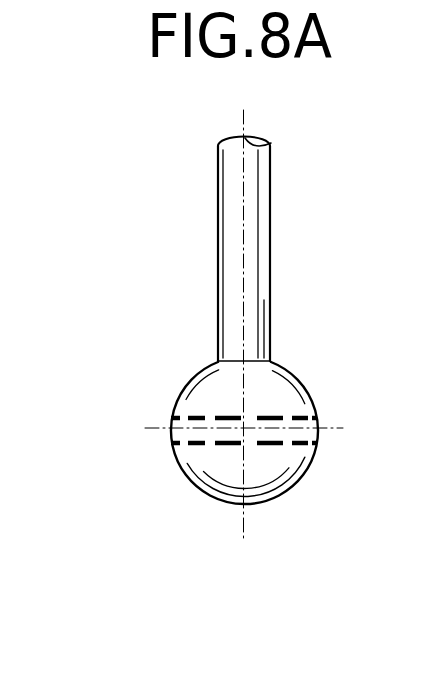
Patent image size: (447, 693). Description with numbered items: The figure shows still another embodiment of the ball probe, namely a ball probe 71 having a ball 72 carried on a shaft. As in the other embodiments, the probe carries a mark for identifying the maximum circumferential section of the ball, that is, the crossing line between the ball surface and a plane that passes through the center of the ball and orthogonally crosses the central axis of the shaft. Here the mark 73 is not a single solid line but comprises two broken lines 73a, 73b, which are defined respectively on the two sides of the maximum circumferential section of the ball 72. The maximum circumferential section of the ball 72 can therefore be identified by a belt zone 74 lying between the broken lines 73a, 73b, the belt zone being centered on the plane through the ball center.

The ball probe 71 is at (224, 341).
The ball 72 is at (292, 381).
The mark 73 is at (194, 446).
The broken line 73a is at (173, 417).
The broken line 73b is at (195, 446).
The belt zone 74 is at (168, 423).